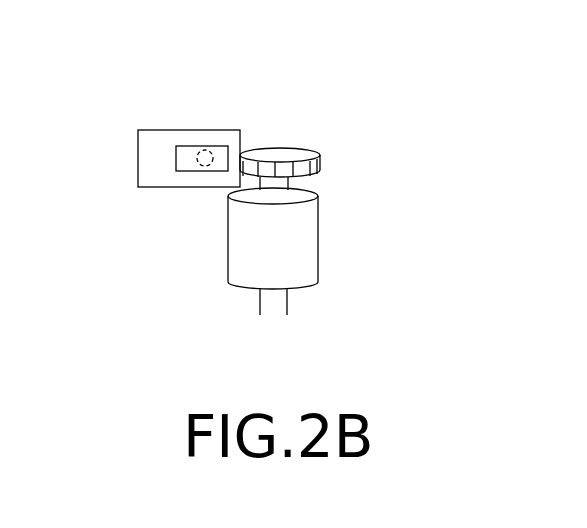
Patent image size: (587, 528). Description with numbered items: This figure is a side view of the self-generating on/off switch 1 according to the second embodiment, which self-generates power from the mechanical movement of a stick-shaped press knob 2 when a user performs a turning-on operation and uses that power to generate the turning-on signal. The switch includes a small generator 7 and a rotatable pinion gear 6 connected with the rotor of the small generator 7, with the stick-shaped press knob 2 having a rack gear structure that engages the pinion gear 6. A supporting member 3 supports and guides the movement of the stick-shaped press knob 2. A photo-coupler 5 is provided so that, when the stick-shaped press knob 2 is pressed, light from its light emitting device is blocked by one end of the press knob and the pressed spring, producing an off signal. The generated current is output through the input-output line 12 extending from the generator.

The self-generating on/off switch 1 is at (344, 105).
The stick-shaped press knob 2 is at (185, 171).
The supporting member 3 is at (147, 157).
The photo-coupler 5 is at (205, 150).
The pinion gear 6 is at (321, 162).
The small generator 7 is at (306, 237).
The input-output line 12 is at (250, 300).